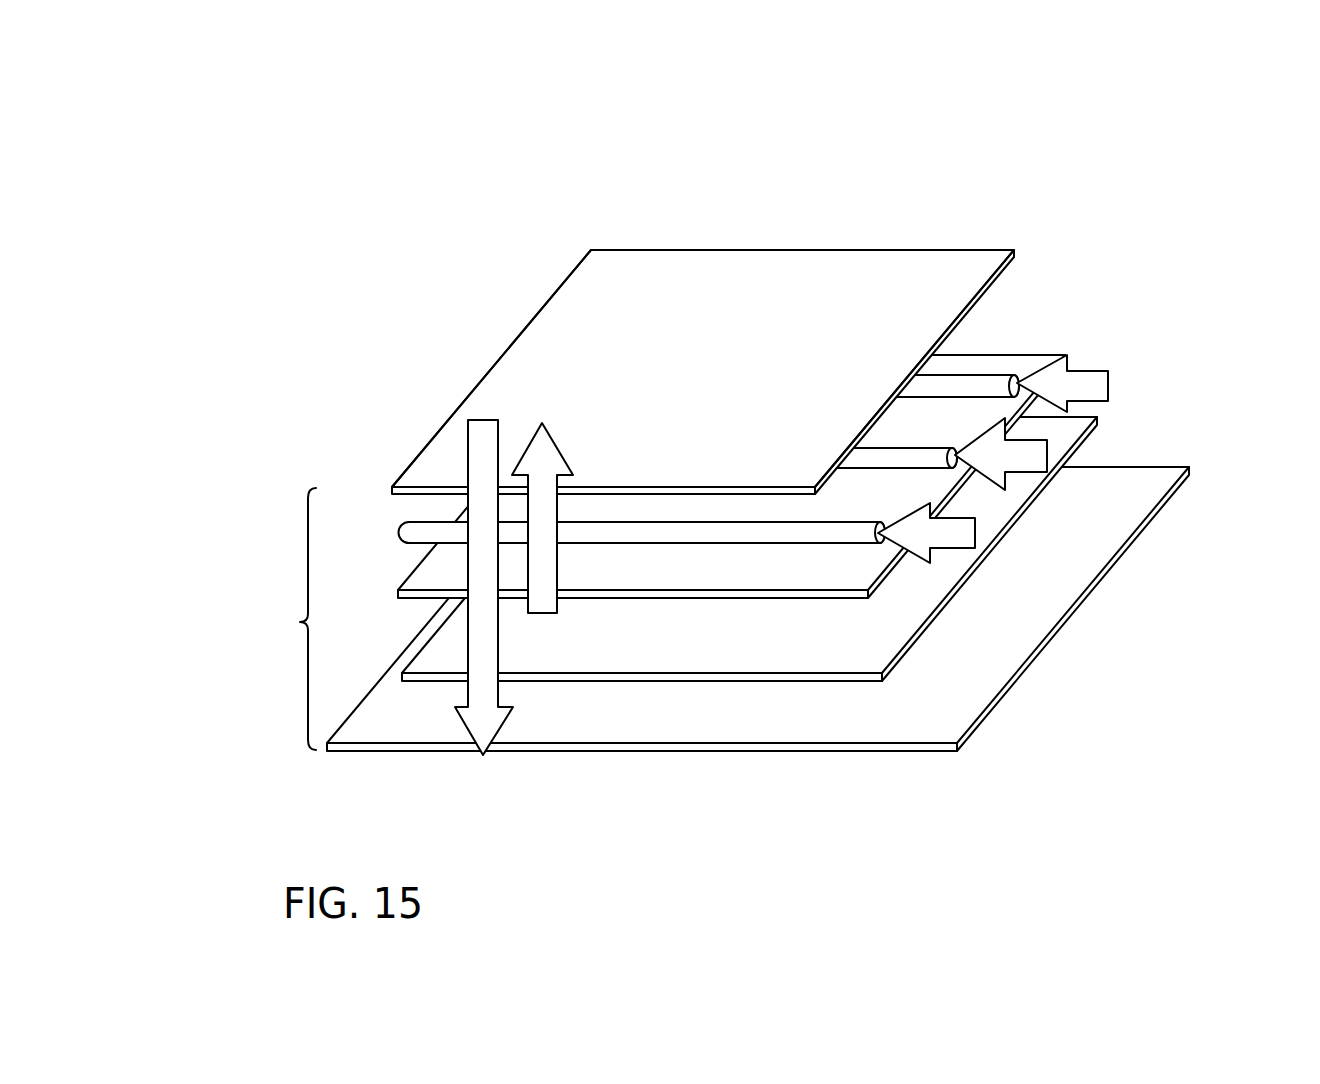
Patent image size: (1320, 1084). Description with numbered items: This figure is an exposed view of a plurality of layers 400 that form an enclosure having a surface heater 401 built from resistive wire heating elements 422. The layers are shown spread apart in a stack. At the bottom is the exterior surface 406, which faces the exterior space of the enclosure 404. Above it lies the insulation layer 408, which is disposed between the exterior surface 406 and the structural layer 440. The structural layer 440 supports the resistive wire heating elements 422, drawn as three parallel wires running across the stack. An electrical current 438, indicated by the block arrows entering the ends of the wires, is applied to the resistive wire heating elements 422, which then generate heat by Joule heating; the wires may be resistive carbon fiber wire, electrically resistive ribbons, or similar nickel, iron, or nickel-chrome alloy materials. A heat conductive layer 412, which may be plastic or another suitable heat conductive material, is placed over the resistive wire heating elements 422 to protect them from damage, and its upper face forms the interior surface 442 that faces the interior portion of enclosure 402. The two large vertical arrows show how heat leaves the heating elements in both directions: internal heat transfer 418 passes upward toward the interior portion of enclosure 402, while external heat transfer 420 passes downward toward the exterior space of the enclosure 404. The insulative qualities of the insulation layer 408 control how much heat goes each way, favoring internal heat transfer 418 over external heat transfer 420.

The plurality of layers 400 is at (710, 472).
The surface heater 401 is at (292, 226).
The interior portion of enclosure 402 is at (712, 160).
The exterior space of the enclosure 404 is at (697, 892).
The exterior surface 406 is at (957, 753).
The insulation layer 408 is at (907, 612).
The heat conductive layer 412 is at (977, 310).
The internal heat transfer 418 is at (547, 453).
The external heat transfer 420 is at (480, 585).
The resistive wire heating elements 422 is at (858, 527).
The electrical current 438 is at (952, 527).
The structural layer 440 is at (773, 555).
The interior surface 442 is at (633, 296).